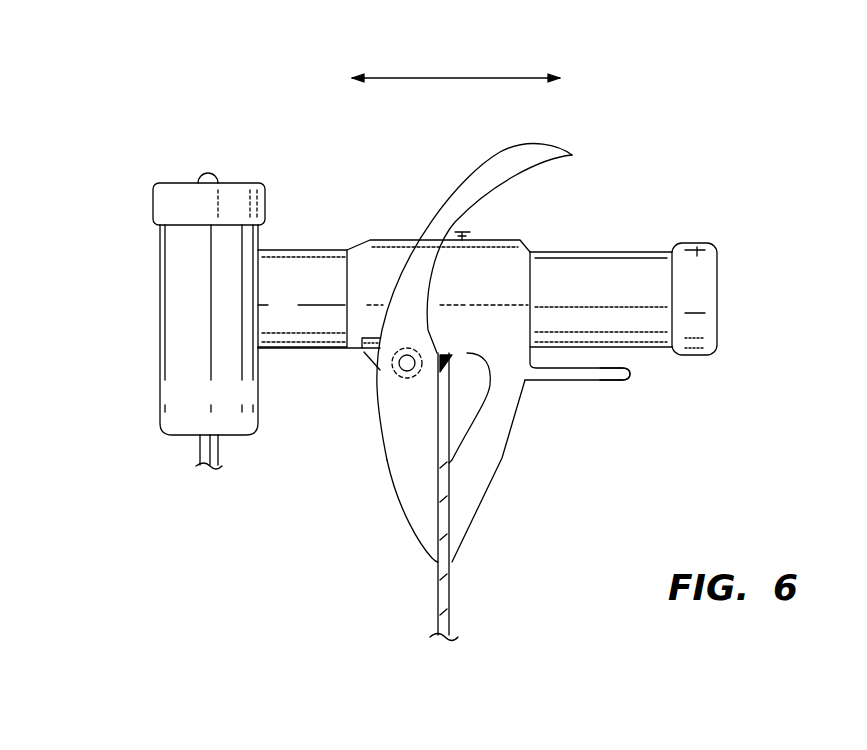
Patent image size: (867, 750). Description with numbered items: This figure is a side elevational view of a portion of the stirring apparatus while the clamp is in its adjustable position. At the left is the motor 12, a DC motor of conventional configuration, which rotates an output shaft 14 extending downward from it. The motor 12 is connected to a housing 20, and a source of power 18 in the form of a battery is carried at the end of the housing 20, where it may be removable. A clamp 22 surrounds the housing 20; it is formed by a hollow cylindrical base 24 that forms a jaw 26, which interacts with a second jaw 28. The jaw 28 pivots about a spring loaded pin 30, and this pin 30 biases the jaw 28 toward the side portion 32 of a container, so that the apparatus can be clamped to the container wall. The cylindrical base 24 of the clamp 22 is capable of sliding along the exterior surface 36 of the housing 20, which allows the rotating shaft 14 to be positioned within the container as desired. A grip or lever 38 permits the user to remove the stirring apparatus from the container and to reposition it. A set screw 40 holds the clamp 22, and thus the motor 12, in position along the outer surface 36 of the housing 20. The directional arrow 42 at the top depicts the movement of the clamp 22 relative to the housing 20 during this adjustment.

The motor 12 is at (177, 252).
The output shaft 14 is at (201, 450).
The source of power 18 is at (697, 258).
The housing 20 is at (608, 260).
The clamp 22 is at (440, 180).
The hollow cylindrical base 24 is at (362, 358).
The jaw 26 is at (497, 470).
The jaw 28 is at (410, 507).
The spring loaded pin 30 is at (407, 377).
The side portion 32 is at (450, 575).
The exterior surface 36 is at (297, 262).
The grip or lever 38 is at (615, 373).
The set screw 40 is at (466, 228).
The directional arrow 42 is at (460, 78).